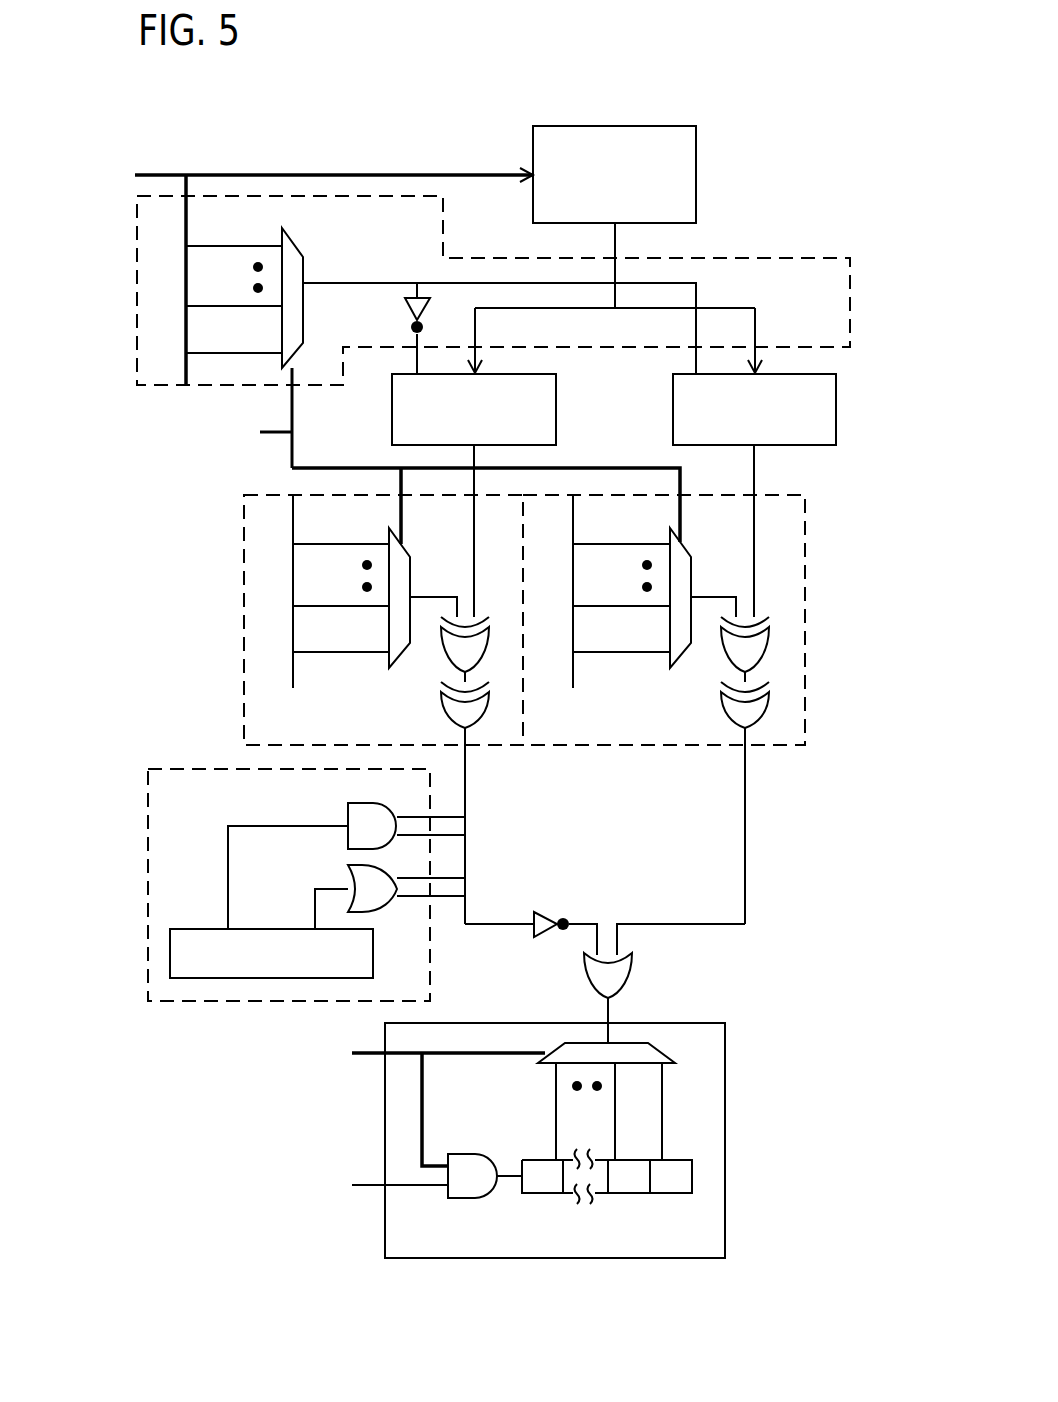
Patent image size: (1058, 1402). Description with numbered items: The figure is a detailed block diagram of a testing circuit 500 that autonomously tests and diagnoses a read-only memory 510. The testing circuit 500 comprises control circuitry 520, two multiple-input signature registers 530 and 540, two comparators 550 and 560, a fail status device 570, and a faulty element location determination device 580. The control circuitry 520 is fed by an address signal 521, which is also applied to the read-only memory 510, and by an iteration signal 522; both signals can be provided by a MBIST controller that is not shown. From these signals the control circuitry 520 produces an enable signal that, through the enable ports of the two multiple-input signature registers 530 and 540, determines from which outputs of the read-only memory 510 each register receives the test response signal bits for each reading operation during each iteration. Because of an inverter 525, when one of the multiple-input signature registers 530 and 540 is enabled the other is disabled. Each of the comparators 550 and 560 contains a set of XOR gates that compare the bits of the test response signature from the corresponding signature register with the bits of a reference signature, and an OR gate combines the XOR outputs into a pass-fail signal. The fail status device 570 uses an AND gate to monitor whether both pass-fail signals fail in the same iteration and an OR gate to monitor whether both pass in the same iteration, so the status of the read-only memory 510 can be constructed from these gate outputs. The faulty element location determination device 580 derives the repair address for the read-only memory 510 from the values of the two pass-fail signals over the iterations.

The testing circuit 500 is at (733, 80).
The read-only memory 510 is at (696, 172).
The control circuitry 520 is at (786, 257).
The address signal 521 is at (124, 160).
The iteration signal 522 is at (160, 432).
The inverter 525 is at (400, 312).
The multiple-input signature register 530 is at (392, 415).
The multiple-input signature register 540 is at (836, 408).
The comparator 550 is at (243, 615).
The comparator 560 is at (805, 617).
The fail status device 570 is at (148, 883).
The faulty element location determination device 580 is at (725, 1140).